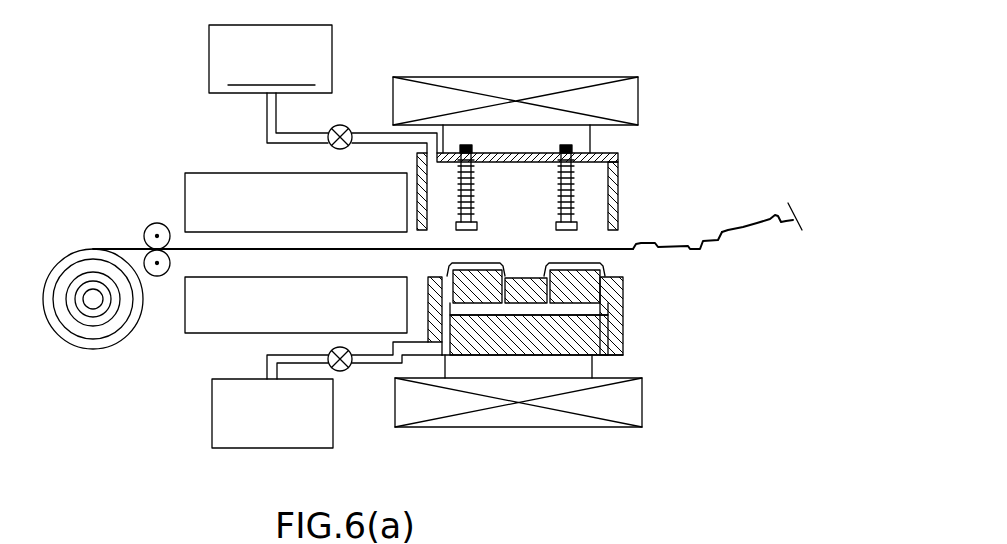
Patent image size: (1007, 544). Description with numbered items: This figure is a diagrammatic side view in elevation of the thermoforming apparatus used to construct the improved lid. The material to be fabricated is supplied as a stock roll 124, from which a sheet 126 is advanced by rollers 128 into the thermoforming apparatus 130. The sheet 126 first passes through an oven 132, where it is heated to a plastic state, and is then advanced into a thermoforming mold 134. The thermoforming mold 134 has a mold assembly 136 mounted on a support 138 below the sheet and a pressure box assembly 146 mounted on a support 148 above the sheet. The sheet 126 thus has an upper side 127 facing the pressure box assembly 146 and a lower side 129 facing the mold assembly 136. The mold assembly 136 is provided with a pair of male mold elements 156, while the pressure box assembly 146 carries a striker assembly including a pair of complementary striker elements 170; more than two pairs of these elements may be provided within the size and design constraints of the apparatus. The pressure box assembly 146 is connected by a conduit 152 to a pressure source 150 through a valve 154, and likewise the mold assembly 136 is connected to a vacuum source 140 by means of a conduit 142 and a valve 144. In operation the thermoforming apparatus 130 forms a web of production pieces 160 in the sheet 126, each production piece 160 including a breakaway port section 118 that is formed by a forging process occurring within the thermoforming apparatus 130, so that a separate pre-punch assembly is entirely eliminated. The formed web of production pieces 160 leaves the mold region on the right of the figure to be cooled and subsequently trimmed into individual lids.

The breakaway port section 118 is at (760, 230).
The stock roll 124 is at (98, 348).
The sheet 126 is at (115, 248).
The upper side 127 is at (508, 248).
The rollers 128 is at (111, 215).
The lower side 129 is at (612, 250).
The thermoforming apparatus 130 is at (621, 205).
The oven 132 is at (248, 252).
The thermoforming mold 134 is at (552, 66).
The mold assembly 136 is at (490, 345).
The support 138 is at (577, 417).
The vacuum source 140 is at (240, 448).
The conduit 142 is at (267, 360).
The valve 144 is at (350, 368).
The pressure box assembly 146 is at (547, 157).
The support 148 is at (498, 87).
The pressure source 150 is at (218, 82).
The conduit 152 is at (267, 108).
The valve 154 is at (343, 123).
The male mold elements 156 is at (520, 303).
The production pieces 160 is at (733, 190).
The striker elements 170 is at (560, 193).